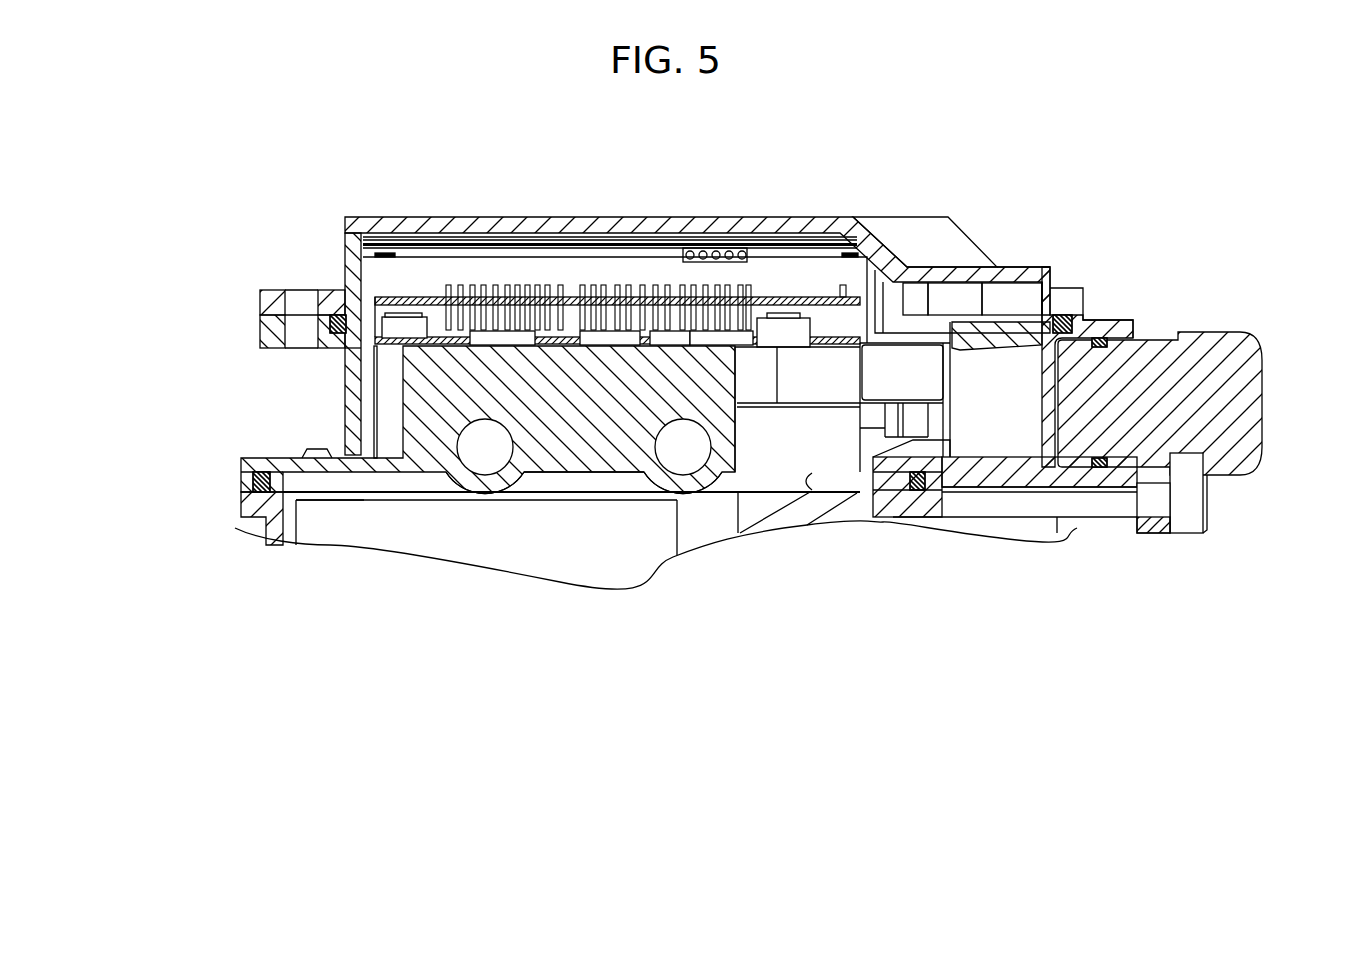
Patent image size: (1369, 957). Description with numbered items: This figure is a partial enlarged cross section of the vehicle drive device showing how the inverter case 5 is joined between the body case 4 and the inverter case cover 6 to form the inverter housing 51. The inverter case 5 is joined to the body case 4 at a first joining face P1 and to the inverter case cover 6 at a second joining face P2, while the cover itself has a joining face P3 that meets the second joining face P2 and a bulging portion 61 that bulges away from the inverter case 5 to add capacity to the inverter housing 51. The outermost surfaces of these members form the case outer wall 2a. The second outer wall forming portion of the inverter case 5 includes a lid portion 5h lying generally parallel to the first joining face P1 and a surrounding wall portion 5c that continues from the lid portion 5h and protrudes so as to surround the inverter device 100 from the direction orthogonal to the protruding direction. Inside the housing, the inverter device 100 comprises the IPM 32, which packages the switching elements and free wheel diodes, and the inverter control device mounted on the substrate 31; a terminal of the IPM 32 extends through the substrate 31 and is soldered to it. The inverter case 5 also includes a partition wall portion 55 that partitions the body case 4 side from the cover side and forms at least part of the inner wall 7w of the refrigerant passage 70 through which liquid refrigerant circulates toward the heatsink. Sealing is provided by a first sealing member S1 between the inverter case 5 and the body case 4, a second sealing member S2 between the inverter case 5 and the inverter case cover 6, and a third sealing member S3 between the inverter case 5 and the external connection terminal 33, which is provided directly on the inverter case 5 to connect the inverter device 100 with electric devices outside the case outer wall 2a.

The case outer wall 2a is at (382, 216).
The inverter housing 51 is at (389, 361).
The inverter device 100 is at (608, 266).
The bulging portion 61 is at (689, 216).
The inverter case cover 6 is at (819, 222).
The second joining face P2 is at (301, 311).
The second sealing member S2 is at (1060, 316).
The third sealing member S3 is at (1100, 337).
The substrate 31 is at (757, 297).
The joining face P3 is at (272, 318).
The IPM 32 is at (740, 340).
The surrounding wall portion 5c is at (344, 365).
The external connection terminal 33 is at (1253, 398).
The refrigerant passage 70 is at (676, 439).
The lid portion 5h is at (258, 452).
The first sealing member S1 is at (252, 479).
The inverter case 5 is at (386, 466).
The inner wall 7w is at (477, 461).
The partition wall portion 55 is at (580, 473).
The first joining face P1 is at (364, 497).
The body case 4 is at (885, 520).